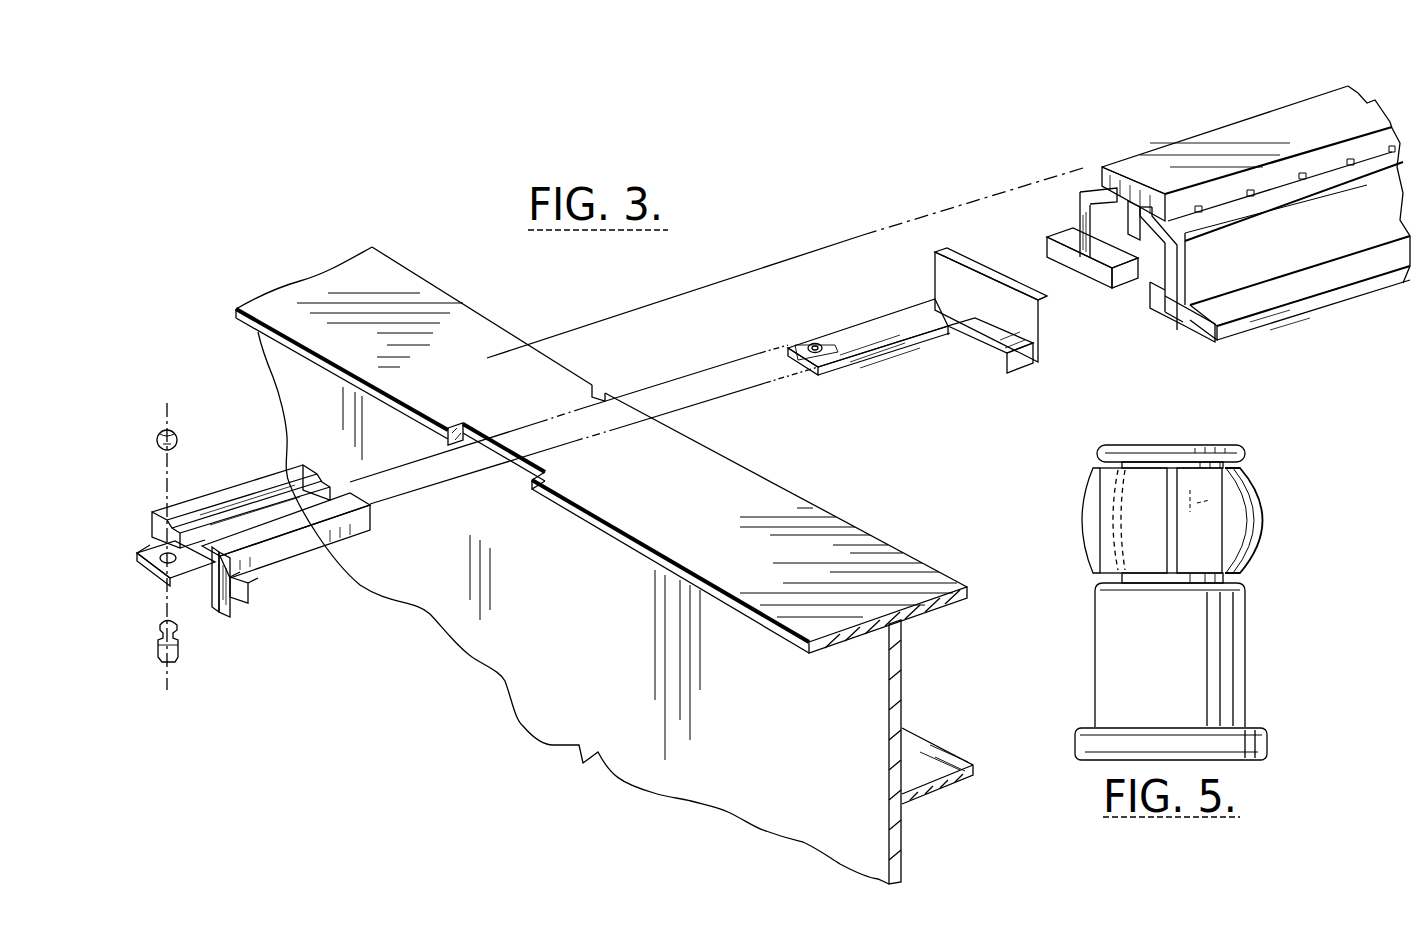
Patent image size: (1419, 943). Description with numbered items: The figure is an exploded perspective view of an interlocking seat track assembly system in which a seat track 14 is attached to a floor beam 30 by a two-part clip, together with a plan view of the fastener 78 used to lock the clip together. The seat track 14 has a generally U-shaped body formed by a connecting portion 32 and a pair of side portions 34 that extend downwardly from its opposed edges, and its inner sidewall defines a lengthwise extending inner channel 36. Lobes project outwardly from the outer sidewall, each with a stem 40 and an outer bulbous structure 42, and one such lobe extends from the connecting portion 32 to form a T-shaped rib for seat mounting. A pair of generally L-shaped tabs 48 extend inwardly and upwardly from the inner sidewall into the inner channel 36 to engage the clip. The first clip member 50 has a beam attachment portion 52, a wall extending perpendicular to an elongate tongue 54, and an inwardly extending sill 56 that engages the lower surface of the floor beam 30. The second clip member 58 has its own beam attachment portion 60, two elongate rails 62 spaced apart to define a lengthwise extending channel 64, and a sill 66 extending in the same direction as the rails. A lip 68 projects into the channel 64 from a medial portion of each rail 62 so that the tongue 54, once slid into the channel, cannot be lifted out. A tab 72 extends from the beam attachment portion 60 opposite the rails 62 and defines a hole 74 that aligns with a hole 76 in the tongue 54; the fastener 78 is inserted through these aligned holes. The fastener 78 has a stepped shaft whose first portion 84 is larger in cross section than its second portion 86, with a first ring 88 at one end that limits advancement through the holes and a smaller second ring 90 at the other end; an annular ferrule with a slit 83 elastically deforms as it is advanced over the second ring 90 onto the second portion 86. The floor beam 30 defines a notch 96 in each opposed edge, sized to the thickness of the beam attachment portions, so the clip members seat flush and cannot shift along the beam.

In FIG. 3, the seat track 14 is at (1192, 211).
In FIG. 3, the floor beam 30 is at (896, 858).
In FIG. 3, the connecting portion 32 is at (1162, 190).
In FIG. 3, the side portions 34 is at (1083, 198).
In FIG. 3, the inner channel 36 is at (1143, 287).
In FIG. 3, the stem 40 is at (1130, 205).
In FIG. 3, the outer bulbous structure 42 is at (1254, 136).
In FIG. 3, the L-shaped tabs 48 is at (1072, 276).
In FIG. 3, the first clip member 50 is at (931, 325).
In FIG. 3, the beam attachment portion 52 is at (1040, 345).
In FIG. 3, the elongate tongue 54 is at (882, 337).
In FIG. 3, the sill 56 is at (972, 352).
In FIG. 3, the second clip member 58 is at (227, 556).
In FIG. 3, the beam attachment portion 60 is at (216, 612).
In FIG. 3, the elongate rails 62 is at (202, 503).
In FIG. 3, the lengthwise extending channel 64 is at (331, 489).
In FIG. 3, the sill 66 is at (249, 592).
In FIG. 3, the lip 68 is at (147, 532).
In FIG. 3, the tab 72 is at (190, 590).
In FIG. 3, the hole 74 is at (150, 557).
In FIG. 3, the hole 76 is at (815, 343).
In FIG. 3, the fastener 78 is at (152, 658).
In FIG. 5, the fastener 78 is at (1215, 588).
In FIG. 3, the slit 83 is at (178, 434).
In FIG. 5, the slit 83 is at (1172, 537).
In FIG. 5, the first portion 84 is at (1222, 668).
In FIG. 5, the second portion 86 is at (1255, 482).
In FIG. 5, the first ring 88 is at (1226, 745).
In FIG. 5, the second ring 90 is at (1242, 452).
In FIG. 3, the notch 96 is at (606, 396).